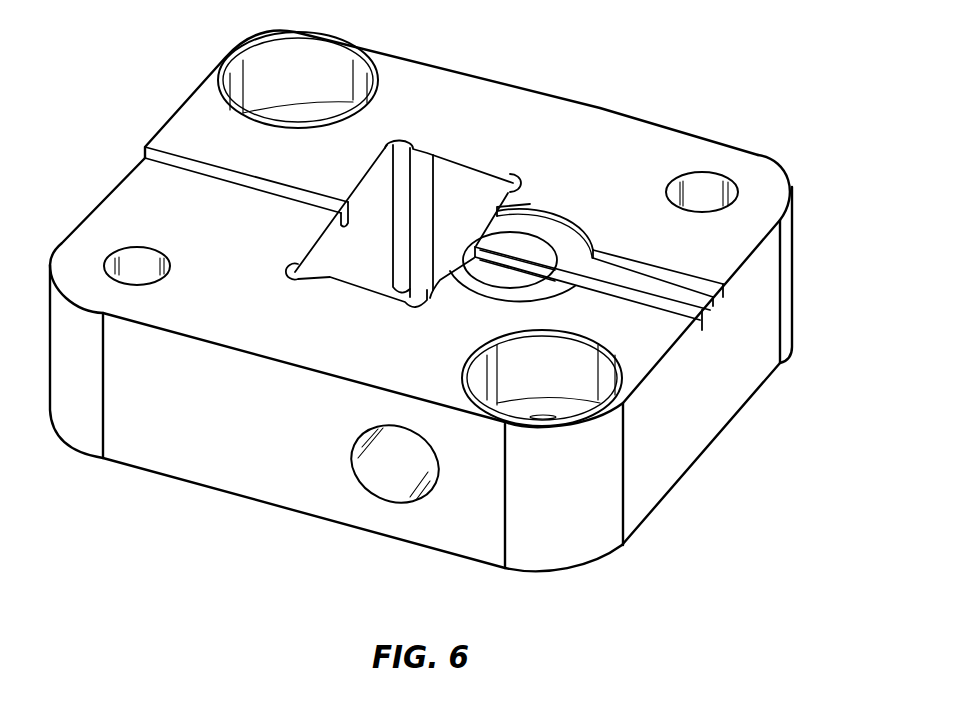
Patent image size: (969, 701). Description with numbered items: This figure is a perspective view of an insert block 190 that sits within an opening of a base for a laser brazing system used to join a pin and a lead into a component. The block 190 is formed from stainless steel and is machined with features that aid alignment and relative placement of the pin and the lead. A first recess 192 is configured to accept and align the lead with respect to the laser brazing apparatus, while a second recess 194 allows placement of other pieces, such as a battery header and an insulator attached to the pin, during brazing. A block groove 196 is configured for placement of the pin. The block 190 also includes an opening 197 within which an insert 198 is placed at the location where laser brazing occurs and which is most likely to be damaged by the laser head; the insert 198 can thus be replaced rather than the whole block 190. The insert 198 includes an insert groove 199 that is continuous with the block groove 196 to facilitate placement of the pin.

The insert block 190 is at (117, 217).
The first recess 192 is at (703, 295).
The second recess 194 is at (458, 190).
The block groove 196 is at (180, 163).
The opening 197 is at (555, 210).
The insert 198 is at (528, 248).
The insert groove 199 is at (533, 267).